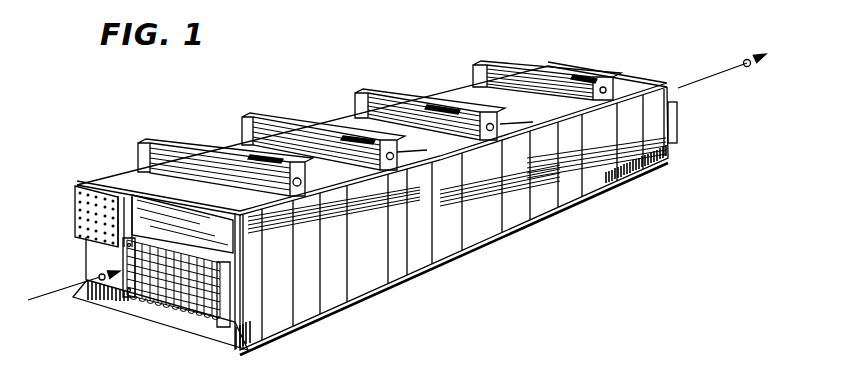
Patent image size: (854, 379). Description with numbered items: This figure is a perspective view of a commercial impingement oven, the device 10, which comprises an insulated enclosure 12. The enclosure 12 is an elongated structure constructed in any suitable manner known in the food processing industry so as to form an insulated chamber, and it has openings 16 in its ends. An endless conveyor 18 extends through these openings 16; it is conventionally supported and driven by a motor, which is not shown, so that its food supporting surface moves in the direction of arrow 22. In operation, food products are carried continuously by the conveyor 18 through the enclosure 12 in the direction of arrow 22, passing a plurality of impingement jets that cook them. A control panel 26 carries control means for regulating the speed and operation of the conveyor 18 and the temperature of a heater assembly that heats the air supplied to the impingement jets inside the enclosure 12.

The device 10 is at (543, 221).
The insulated enclosure 12 is at (130, 176).
The openings 16 is at (212, 278).
The endless conveyor 18 is at (163, 302).
The arrow 22 is at (55, 291).
The control panel 26 is at (86, 185).